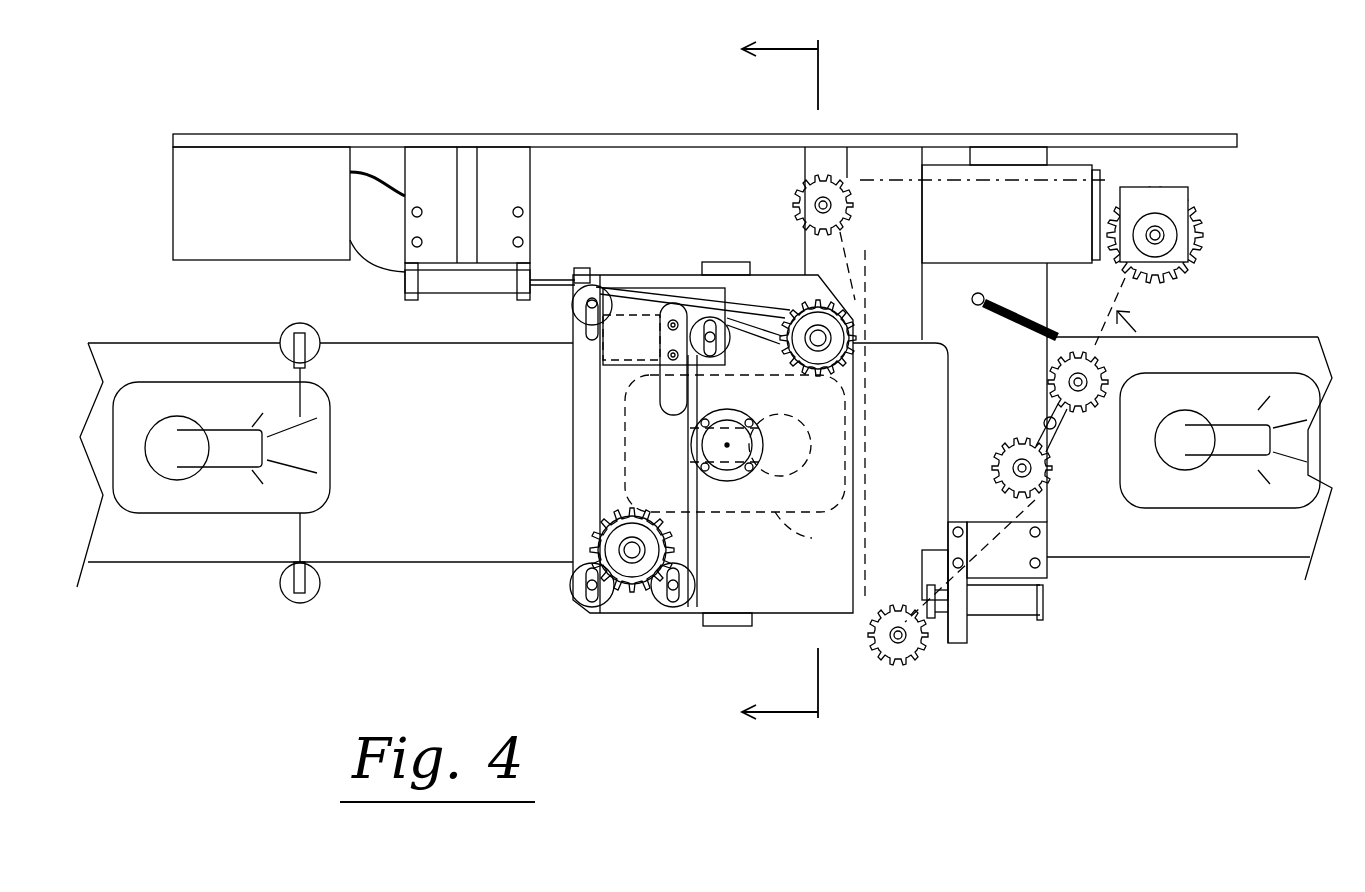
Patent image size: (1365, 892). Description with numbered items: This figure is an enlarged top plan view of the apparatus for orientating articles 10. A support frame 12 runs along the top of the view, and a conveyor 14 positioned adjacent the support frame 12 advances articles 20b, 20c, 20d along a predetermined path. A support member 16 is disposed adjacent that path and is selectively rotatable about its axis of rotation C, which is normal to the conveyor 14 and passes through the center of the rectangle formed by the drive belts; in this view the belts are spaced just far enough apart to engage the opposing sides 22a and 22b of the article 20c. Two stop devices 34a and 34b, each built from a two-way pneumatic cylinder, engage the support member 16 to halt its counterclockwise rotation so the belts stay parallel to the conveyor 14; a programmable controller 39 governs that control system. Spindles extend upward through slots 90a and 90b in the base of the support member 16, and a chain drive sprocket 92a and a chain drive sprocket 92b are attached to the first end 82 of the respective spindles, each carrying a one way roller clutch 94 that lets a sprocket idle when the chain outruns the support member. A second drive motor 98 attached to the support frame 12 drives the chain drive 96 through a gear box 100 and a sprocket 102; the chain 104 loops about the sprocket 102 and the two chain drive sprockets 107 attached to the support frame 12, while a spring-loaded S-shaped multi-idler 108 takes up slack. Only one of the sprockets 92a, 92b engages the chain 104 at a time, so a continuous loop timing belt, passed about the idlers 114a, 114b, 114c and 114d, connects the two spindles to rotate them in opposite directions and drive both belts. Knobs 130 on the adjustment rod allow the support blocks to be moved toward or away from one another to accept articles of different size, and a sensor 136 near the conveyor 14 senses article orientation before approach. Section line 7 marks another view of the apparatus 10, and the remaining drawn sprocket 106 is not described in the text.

The section line 7 is at (780, 384).
The apparatus for orientating articles 10 is at (626, 120).
The support frame 12 is at (650, 149).
The conveyor 14 is at (452, 565).
The support member 16 is at (600, 449).
The article 20b is at (330, 437).
The article 20c is at (860, 458).
The article 20d is at (1215, 502).
The opposing side of article 22a is at (814, 531).
The opposing side of article 22b is at (860, 422).
The stop device 34a is at (466, 297).
The stop device 34b is at (1020, 616).
The programmable controller 39 is at (177, 197).
The first end of spindle 82 is at (828, 296).
The slot 90a is at (625, 508).
The slot 90b is at (860, 392).
The chain drive sprocket 92a is at (600, 528).
The chain drive sprocket 92b is at (803, 350).
The one way roller clutch 94 is at (850, 323).
The chain drive 96 is at (1062, 338).
The second drive motor 98 is at (936, 226).
The gear box 100 is at (1198, 218).
The sprocket 102 is at (1178, 276).
The chain 104 is at (1152, 296).
The idler sprockets 106 is at (1067, 430).
The chain drive sprocket 107 is at (802, 192).
The multi-idler / timing belt 108 is at (568, 382).
The idler 114a is at (585, 585).
The idler 114b is at (693, 585).
The idler 114c is at (585, 312).
The idler 114d is at (705, 358).
The knob 130 is at (718, 262).
The sensor 136 is at (285, 335).
The axis of rotation C is at (727, 445).